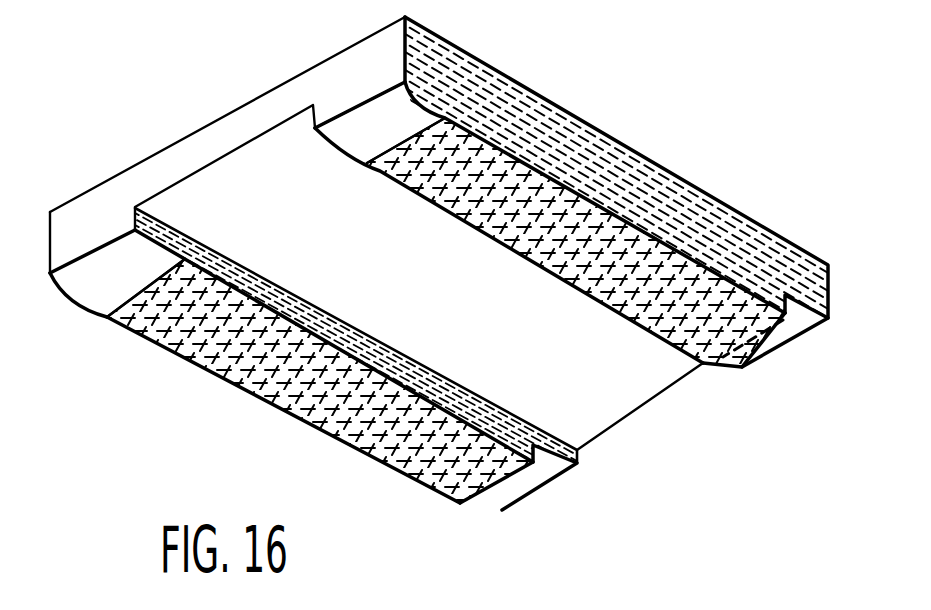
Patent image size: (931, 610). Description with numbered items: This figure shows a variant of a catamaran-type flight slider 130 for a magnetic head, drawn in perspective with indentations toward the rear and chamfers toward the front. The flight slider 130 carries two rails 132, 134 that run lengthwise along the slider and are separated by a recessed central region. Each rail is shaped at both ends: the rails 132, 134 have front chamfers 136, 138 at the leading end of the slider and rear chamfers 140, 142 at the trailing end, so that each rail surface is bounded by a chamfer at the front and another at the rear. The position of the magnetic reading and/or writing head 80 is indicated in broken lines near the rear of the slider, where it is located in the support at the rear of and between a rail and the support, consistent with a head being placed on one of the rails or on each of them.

The flight slider 130 is at (703, 162).
The rail 132 is at (307, 410).
The rail 134 is at (550, 187).
The front chamfer 136 is at (103, 293).
The front chamfer 138 is at (362, 132).
The rear chamfer 140 is at (533, 480).
The rear chamfer 142 is at (800, 322).
The magnetic reading and/or writing head 80 is at (723, 357).